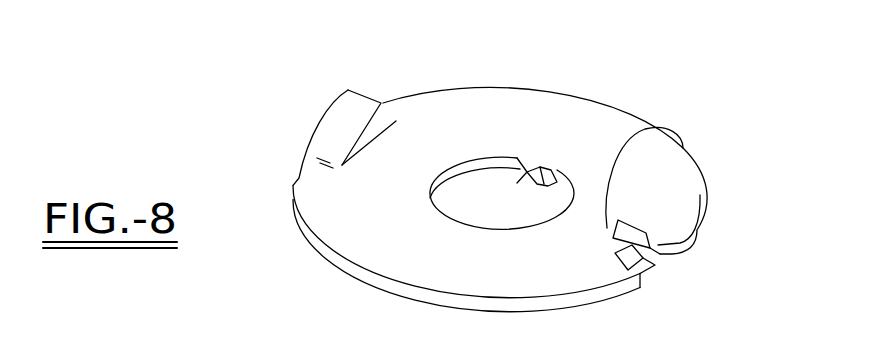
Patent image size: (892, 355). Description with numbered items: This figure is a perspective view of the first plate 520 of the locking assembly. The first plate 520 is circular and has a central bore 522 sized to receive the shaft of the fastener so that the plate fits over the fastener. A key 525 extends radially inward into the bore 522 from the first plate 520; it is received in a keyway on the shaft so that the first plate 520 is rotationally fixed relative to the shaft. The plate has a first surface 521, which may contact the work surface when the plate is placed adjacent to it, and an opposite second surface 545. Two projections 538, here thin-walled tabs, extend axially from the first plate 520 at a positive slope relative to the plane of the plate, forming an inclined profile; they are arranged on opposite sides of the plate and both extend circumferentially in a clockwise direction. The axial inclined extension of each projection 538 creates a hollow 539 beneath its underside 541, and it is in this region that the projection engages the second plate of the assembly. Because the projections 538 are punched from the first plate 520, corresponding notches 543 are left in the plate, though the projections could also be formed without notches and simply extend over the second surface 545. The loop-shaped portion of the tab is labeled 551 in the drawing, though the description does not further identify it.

The first plate 520 is at (268, 70).
The first surface 521 is at (397, 303).
The bore 522 is at (486, 157).
The key 525 is at (520, 180).
The projection 538 is at (347, 116).
The hollow 539 is at (398, 118).
The underside 541 is at (650, 256).
The notch 543 is at (642, 270).
The second surface 545 is at (379, 257).
The arched loop portion 551 is at (640, 129).